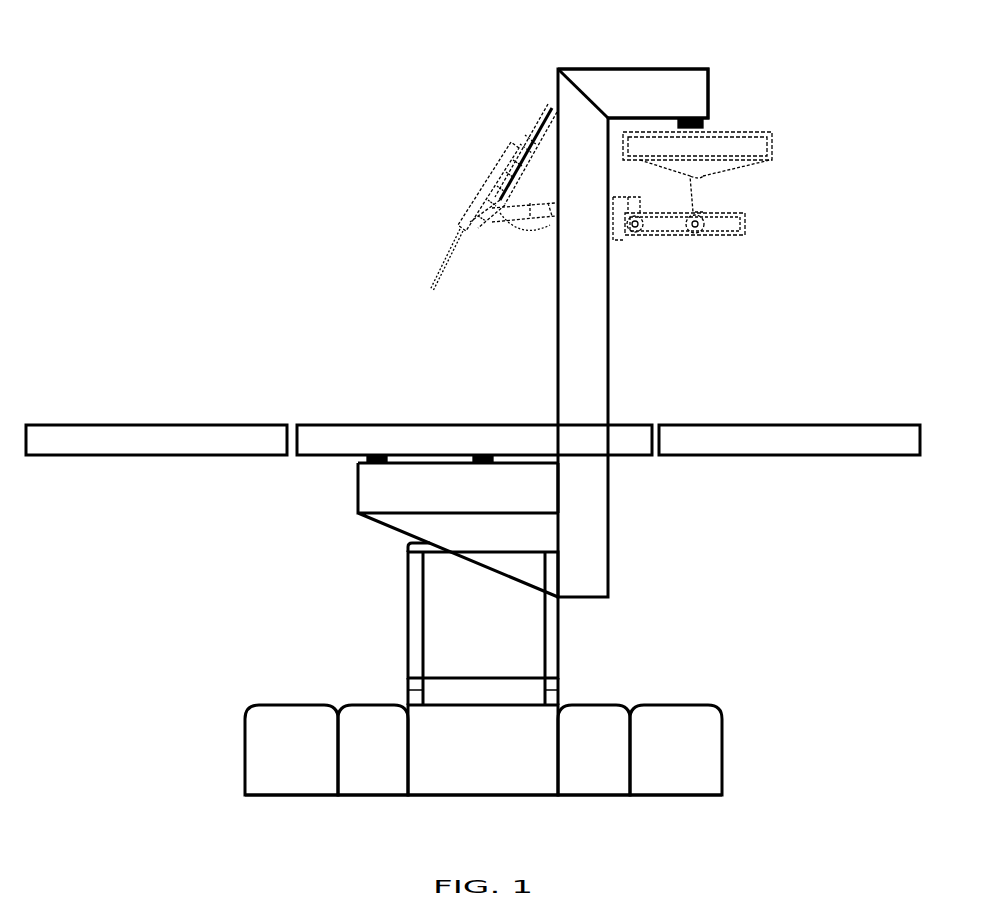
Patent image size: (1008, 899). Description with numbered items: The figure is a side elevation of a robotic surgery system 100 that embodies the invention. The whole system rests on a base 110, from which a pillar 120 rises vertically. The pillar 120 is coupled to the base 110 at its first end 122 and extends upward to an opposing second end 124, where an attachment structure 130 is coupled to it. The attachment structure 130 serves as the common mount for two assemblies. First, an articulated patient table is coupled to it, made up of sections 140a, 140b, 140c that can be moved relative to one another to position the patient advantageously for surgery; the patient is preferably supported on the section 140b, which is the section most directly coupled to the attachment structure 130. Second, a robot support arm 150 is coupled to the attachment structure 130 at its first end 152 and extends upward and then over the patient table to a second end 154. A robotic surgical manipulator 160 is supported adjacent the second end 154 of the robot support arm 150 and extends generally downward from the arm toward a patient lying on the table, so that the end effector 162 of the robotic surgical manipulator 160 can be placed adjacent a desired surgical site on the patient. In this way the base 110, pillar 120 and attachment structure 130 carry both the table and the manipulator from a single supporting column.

The robotic surgery system 100 is at (282, 137).
The base 110 is at (290, 705).
The pillar 120 is at (408, 655).
The first end 122 is at (408, 705).
The second end 124 is at (413, 543).
The attachment structure 130 is at (358, 490).
The section 140a is at (157, 425).
The section 140b is at (428, 425).
The section 140c is at (790, 425).
The robot support arm 150 is at (610, 357).
The first end 152 is at (558, 480).
The second end 154 is at (683, 69).
The robotic surgical manipulator 160 is at (457, 152).
The end effector 162 is at (428, 292).